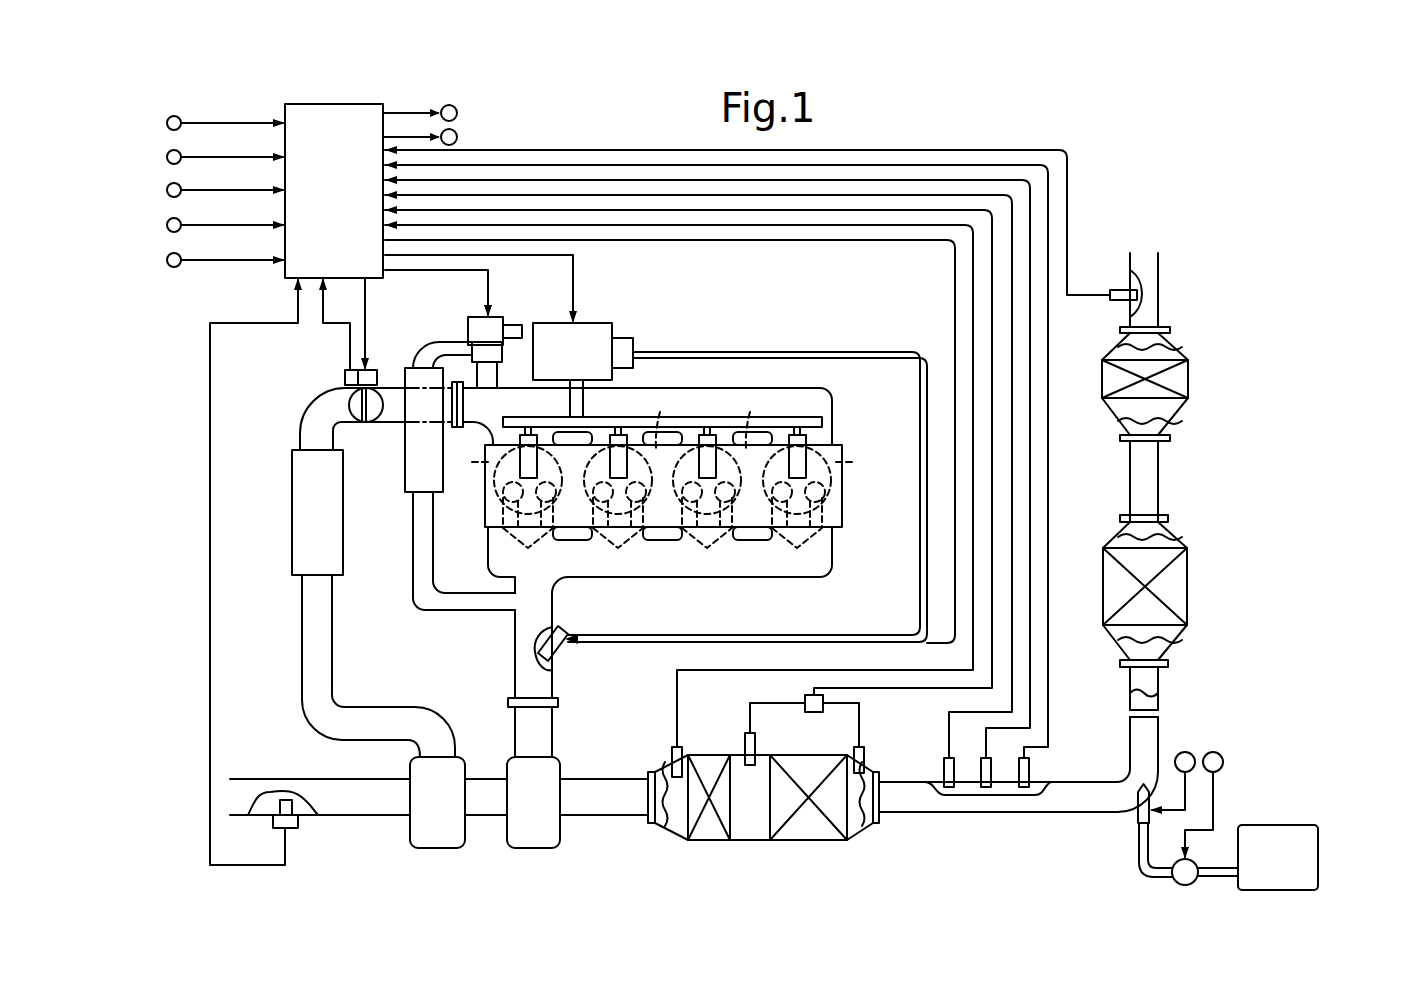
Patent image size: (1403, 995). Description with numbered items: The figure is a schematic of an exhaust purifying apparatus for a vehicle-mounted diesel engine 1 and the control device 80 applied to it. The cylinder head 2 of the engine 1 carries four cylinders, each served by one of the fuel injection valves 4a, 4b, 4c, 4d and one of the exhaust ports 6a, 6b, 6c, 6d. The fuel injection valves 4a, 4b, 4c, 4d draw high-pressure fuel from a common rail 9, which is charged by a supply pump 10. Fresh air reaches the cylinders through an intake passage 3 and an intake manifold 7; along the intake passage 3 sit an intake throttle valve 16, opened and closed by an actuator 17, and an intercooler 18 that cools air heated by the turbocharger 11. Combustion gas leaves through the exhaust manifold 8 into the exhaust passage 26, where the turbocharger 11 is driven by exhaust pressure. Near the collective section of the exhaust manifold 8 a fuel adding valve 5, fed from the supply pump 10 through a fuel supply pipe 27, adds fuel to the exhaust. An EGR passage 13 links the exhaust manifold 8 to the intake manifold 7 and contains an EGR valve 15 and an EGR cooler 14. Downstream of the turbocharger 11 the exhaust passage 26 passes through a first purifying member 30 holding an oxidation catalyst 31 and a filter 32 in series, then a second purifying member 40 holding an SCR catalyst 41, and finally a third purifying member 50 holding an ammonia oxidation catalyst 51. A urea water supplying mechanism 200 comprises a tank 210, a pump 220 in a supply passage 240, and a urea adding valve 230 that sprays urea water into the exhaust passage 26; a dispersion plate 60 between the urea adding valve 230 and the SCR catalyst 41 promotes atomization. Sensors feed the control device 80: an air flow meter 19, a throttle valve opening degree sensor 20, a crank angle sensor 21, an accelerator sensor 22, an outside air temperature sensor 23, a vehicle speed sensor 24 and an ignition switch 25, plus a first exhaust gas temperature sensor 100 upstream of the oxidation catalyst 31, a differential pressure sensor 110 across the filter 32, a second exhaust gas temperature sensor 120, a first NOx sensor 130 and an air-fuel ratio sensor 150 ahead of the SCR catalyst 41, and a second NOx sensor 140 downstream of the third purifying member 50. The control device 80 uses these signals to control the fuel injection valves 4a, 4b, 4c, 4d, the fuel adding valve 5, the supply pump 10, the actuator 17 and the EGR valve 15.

The diesel engine 1 is at (855, 492).
The cylinder head 2 is at (485, 519).
The intake passage 3 is at (300, 434).
The fuel injection valve 4a is at (532, 417).
The fuel injection valve 4b is at (620, 417).
The fuel injection valve 4c is at (709, 417).
The fuel injection valve 4d is at (799, 417).
The fuel adding valve 5 is at (556, 666).
The exhaust port 6a is at (529, 533).
The exhaust port 6b is at (619, 533).
The exhaust port 6c is at (708, 533).
The exhaust port 6d is at (798, 533).
The intake manifold 7 is at (836, 407).
The exhaust manifold 8 is at (763, 578).
The common rail 9 is at (725, 417).
The supply pump 10 is at (589, 323).
The turbocharger 11 is at (485, 776).
The EGR passage 13 is at (413, 568).
The EGR cooler 14 is at (405, 471).
The EGR valve 15 is at (487, 318).
The intake throttle valve 16 is at (340, 404).
The actuator 17 is at (378, 377).
The intercooler 18 is at (292, 551).
The air flow meter 19 is at (300, 822).
The throttle valve opening degree sensor 20 is at (345, 375).
The crank angle sensor 21 is at (168, 124).
The accelerator sensor 22 is at (168, 158).
The outside air temperature sensor 23 is at (168, 191).
The vehicle speed sensor 24 is at (168, 226).
The ignition switch 25 is at (168, 261).
The exhaust passage 26 is at (556, 733).
The fuel supply pipe 27 is at (805, 351).
The first purifying member 30 is at (748, 840).
The oxidation catalyst 31 is at (707, 840).
The filter 32 is at (810, 840).
The second purifying member 40 is at (1190, 608).
The SCR catalyst 41 is at (1189, 575).
The third purifying member 50 is at (1186, 414).
The ammonia oxidation catalyst 51 is at (1189, 385).
The dispersion plate 60 is at (1160, 717).
The control device 80 is at (283, 283).
The first exhaust gas temperature sensor 100 is at (684, 752).
The differential pressure sensor 110 is at (814, 713).
The second exhaust gas temperature sensor 120 is at (944, 770).
The first NOx sensor 130 is at (978, 762).
The second NOx sensor 140 is at (1118, 290).
The air-fuel ratio sensor 150 is at (1031, 771).
The urea water supplying mechanism 200 is at (1292, 815).
The tank 210 is at (1318, 856).
The pump 220 is at (1186, 888).
The urea adding valve 230 is at (1134, 818).
The supply passage 240 is at (1140, 870).